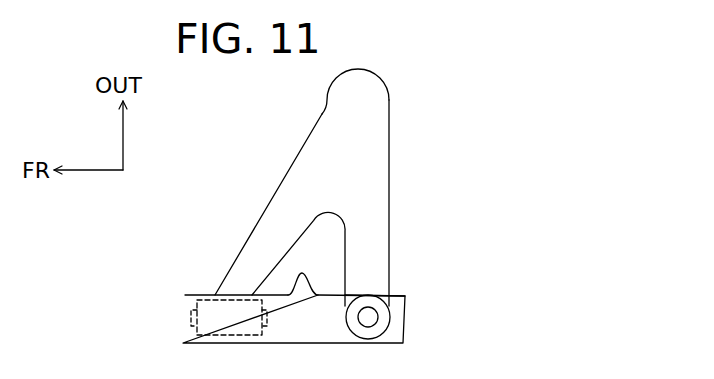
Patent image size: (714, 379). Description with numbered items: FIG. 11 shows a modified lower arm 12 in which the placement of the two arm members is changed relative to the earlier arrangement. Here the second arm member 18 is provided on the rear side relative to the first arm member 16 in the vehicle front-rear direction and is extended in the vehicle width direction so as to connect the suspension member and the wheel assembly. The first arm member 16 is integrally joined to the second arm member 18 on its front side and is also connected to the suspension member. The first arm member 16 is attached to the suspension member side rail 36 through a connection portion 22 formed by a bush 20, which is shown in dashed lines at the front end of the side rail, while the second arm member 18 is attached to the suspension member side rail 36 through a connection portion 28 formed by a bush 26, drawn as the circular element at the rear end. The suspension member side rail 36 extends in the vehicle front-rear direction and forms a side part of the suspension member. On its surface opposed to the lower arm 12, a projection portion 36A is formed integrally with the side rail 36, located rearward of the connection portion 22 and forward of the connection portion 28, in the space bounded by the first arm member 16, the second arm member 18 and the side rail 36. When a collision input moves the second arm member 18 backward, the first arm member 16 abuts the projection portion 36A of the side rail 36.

The lower arm 12 is at (346, 187).
The first arm member 16 is at (389, 208).
The second arm member 18 is at (254, 228).
The bush 20 is at (182, 311).
The connection portion 22 is at (206, 292).
The bush 26 is at (392, 313).
The connection portion 28 is at (383, 290).
The suspension member side rail 36 is at (183, 330).
The projection portion 36A is at (317, 261).